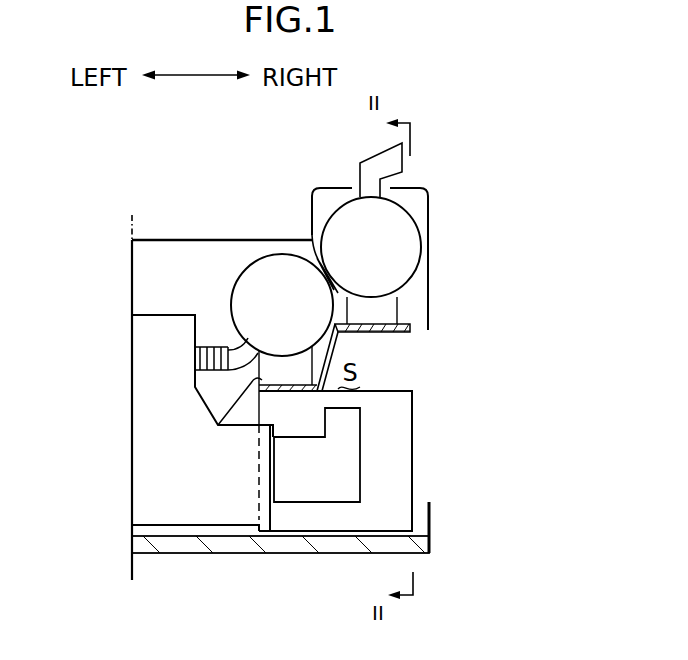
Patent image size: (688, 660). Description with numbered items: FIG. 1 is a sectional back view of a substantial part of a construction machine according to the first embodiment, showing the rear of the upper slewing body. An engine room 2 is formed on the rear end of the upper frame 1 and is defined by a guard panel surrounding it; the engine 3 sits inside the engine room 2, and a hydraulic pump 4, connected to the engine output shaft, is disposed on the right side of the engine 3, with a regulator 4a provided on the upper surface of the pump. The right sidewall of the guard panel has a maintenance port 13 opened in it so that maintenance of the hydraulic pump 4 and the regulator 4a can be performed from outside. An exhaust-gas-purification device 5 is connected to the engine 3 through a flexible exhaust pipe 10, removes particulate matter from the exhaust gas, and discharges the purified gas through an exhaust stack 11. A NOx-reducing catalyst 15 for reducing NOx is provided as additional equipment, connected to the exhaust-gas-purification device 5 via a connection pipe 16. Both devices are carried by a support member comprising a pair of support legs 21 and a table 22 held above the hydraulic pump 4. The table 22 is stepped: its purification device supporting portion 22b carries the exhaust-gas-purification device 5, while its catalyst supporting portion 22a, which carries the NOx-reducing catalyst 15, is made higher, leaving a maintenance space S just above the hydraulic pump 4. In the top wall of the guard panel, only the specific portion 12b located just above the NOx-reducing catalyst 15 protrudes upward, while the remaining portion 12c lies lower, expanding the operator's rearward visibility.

The upper frame 1 is at (247, 553).
The engine room 2 is at (148, 283).
The engine 3 is at (175, 514).
The hydraulic pump 4 is at (304, 503).
The regulator 4a is at (361, 418).
The exhaust-gas-purification device 5 is at (246, 266).
The flexible exhaust pipe 10 is at (216, 346).
The exhaust stack 11 is at (361, 166).
The specific portion 12b is at (321, 187).
The remaining portion 12c is at (158, 240).
The maintenance port 13 is at (430, 397).
The NOx-reducing catalyst 15 is at (428, 213).
The connection pipe 16 is at (308, 240).
The support legs 21 is at (407, 462).
The table 22 is at (319, 341).
The catalyst supporting portion 22a is at (386, 321).
The purification device supporting portion 22b is at (218, 425).